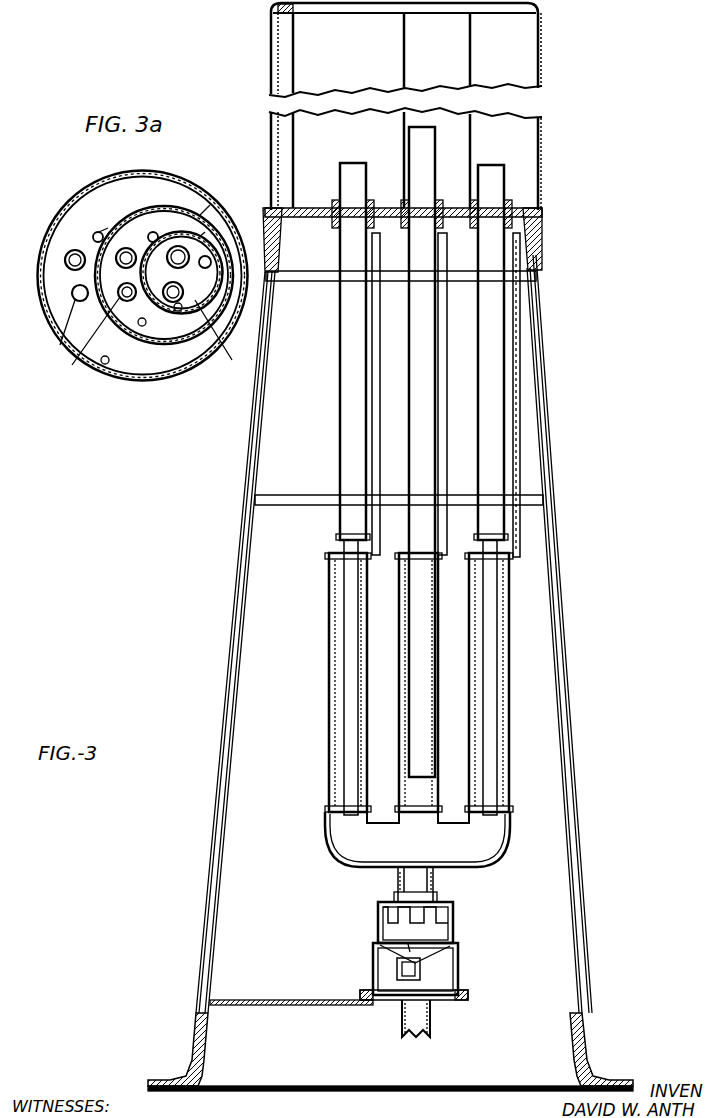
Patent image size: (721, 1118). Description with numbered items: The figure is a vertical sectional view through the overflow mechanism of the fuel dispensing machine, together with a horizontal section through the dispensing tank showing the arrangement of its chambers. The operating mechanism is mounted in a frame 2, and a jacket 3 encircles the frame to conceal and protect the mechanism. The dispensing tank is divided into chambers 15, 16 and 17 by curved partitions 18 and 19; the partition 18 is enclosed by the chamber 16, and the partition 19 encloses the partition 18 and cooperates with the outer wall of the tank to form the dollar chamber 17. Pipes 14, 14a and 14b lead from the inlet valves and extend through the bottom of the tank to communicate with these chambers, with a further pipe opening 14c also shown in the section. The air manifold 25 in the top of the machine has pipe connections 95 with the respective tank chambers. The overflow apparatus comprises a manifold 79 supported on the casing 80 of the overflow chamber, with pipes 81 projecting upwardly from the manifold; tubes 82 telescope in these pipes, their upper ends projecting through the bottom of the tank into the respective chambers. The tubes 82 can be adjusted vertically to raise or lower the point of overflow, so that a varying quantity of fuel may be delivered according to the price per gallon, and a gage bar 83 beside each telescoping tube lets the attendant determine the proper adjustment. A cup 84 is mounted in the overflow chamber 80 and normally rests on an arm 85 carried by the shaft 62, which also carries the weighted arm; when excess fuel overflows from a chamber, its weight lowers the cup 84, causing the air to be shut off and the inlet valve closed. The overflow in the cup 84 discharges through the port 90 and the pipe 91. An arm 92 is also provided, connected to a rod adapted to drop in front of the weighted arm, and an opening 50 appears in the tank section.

In FIG. 3, the frame 2 is at (237, 693).
In FIG. 3, the jacket 3 is at (230, 654).
In FIG. 3A, the pipe 14 is at (210, 260).
In FIG. 3A, the pipe 14a is at (153, 232).
In FIG. 3A, the pipe 14b is at (93, 236).
In FIG. 3A, the small tube opening 14c is at (79, 301).
In FIG. 3, the chamber 15 is at (348, 110).
In FIG. 3A, the chamber 15 is at (182, 273).
In FIG. 3, the chamber 16 is at (437, 110).
In FIG. 3A, the chamber 16 is at (129, 247).
In FIG. 3, the dollar chamber 17 is at (504, 110).
In FIG. 3A, the dollar chamber 17 is at (122, 243).
In FIG. 3, the curved partition 18 is at (404, 33).
In FIG. 3A, the curved partition 18 is at (200, 238).
In FIG. 3, the curved partition 19 is at (474, 58).
In FIG. 3A, the curved partition 19 is at (202, 214).
In FIG. 3A, the air manifold 25 is at (183, 297).
In FIG. 3A, the tube opening 50 is at (128, 301).
In FIG. 3, the shaft 62 is at (420, 968).
In FIG. 3, the manifold 79 is at (417, 857).
In FIG. 3, the casing of overflow chamber 80 is at (452, 926).
In FIG. 3, the pipes 81 is at (367, 646).
In FIG. 3, the tubes 82 is at (409, 301).
In FIG. 3A, the tubes 82 is at (108, 230).
In FIG. 3, the gage bar 83 is at (376, 402).
In FIG. 3, the cup 84 is at (458, 956).
In FIG. 3, the arm 85 is at (412, 970).
In FIG. 3, the port 90 is at (408, 952).
In FIG. 3, the pipe 91 is at (430, 1032).
In FIG. 3A, the arm 92 is at (72, 253).
In FIG. 3A, the pipe connections 95 is at (143, 346).